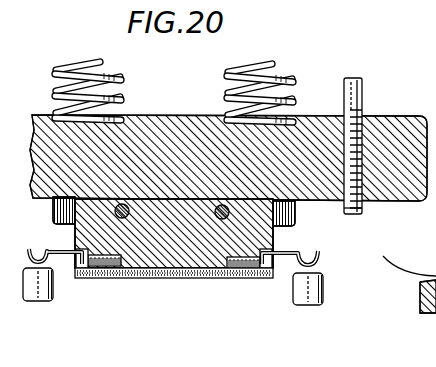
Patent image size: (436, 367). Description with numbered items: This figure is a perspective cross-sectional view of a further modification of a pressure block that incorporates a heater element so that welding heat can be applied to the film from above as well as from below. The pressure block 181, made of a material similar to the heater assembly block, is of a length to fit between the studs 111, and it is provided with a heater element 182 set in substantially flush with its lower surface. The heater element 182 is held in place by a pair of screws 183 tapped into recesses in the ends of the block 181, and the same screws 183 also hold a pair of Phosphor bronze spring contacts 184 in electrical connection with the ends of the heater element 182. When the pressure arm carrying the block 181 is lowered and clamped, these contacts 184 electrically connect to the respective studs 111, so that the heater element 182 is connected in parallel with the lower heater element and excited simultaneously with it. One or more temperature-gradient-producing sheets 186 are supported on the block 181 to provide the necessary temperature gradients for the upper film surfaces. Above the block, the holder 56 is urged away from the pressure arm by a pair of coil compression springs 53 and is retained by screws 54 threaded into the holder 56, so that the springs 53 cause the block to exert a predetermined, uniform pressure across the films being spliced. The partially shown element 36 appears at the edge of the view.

The coil compression springs 53 is at (226, 80).
The screws 54 is at (363, 92).
The holder 56 is at (316, 117).
The studs 111 is at (53, 290).
The pressure block 181 is at (275, 236).
The heater element 182 is at (150, 280).
The screws 183 is at (75, 266).
The spring contacts 184 is at (47, 249).
The temperature-gradient-producing sheets 186 is at (193, 280).
The guide member 36 is at (426, 250).